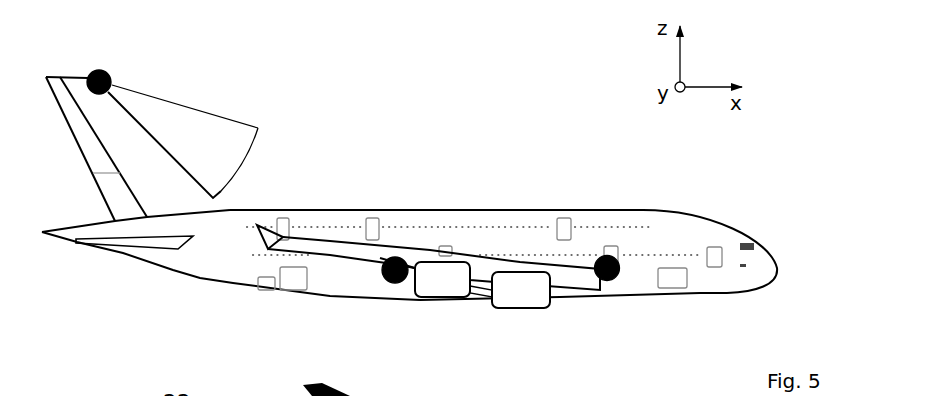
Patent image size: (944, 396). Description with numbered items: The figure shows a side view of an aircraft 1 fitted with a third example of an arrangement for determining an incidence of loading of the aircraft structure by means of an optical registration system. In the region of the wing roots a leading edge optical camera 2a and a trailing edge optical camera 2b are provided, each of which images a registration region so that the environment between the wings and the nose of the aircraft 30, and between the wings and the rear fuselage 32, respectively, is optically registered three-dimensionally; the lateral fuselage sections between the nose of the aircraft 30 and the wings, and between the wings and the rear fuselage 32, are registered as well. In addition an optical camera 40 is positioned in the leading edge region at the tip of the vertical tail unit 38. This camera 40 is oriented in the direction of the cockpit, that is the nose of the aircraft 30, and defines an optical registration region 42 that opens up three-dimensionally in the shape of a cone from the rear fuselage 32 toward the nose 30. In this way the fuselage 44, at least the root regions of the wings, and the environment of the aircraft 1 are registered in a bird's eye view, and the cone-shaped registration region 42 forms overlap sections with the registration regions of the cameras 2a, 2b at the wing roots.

The aircraft 1 is at (422, 179).
The leading edge optical camera 2a is at (610, 283).
The trailing edge optical camera 2b is at (383, 283).
The nose of the aircraft 30 is at (750, 294).
The rear fuselage 32 is at (193, 278).
The vertical tail unit 38 is at (78, 83).
The optical camera 40 is at (108, 70).
The optical registration region 42 is at (198, 132).
The fuselage 44 is at (552, 210).